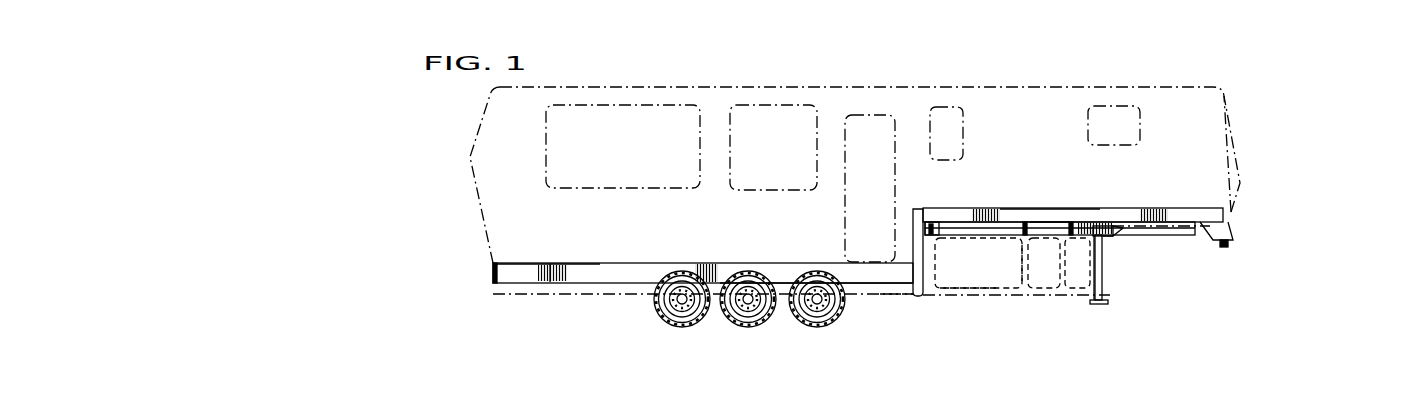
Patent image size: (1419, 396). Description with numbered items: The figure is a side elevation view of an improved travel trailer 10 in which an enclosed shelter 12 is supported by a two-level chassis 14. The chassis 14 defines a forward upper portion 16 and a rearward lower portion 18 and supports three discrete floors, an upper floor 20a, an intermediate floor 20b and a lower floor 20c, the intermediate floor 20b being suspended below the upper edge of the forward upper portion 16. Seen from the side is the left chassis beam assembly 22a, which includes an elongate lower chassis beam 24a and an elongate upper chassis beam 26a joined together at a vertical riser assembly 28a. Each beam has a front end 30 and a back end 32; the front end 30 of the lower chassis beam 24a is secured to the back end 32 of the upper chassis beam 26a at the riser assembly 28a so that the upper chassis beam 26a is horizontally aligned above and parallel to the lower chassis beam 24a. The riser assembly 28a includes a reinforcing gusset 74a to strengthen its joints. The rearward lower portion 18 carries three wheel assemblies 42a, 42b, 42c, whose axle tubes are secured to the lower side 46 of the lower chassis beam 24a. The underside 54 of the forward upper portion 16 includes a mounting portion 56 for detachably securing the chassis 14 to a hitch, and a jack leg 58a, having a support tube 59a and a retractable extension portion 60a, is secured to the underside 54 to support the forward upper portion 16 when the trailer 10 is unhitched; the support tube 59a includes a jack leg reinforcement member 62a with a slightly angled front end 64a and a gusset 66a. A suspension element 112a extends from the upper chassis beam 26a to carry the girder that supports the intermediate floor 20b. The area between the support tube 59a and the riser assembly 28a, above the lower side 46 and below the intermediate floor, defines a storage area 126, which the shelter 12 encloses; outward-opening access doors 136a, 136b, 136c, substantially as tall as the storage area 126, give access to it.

The travel trailer 10 is at (1118, 67).
The enclosed shelter 12 is at (899, 94).
The two-level chassis 14 is at (918, 300).
The forward upper portion 16 is at (1202, 210).
The rearward lower portion 18 is at (525, 283).
The upper floor 20a is at (1177, 208).
The intermediate floor 20b is at (1005, 232).
The lower floor 20c is at (585, 263).
The left chassis beam assembly 22a is at (883, 275).
The lower chassis beam 24a is at (593, 283).
The upper chassis beam 26a is at (1072, 212).
The vertical riser assembly 28a is at (930, 266).
The front end 30 is at (908, 262).
The back end 32 is at (495, 272).
The wheel assembly 42a is at (682, 329).
The wheel assembly 42b is at (748, 329).
The wheel assembly 42c is at (817, 329).
The lower side 46 is at (905, 295).
The underside 54 is at (1045, 208).
The mounting portion 56 is at (1233, 240).
The jack leg 58a is at (1120, 292).
The support tube 59a is at (1100, 262).
The retractable extension portion 60a is at (1106, 303).
The jack leg reinforcement member 62a is at (1118, 233).
The angled front end 64a is at (1121, 231).
The gusset 66a is at (1105, 238).
The reinforcing gusset 74a is at (933, 228).
The suspension element 112a is at (1022, 248).
The storage area 126 is at (995, 275).
The access door 136a is at (1082, 290).
The access door 136b is at (1040, 290).
The access door 136c is at (970, 290).